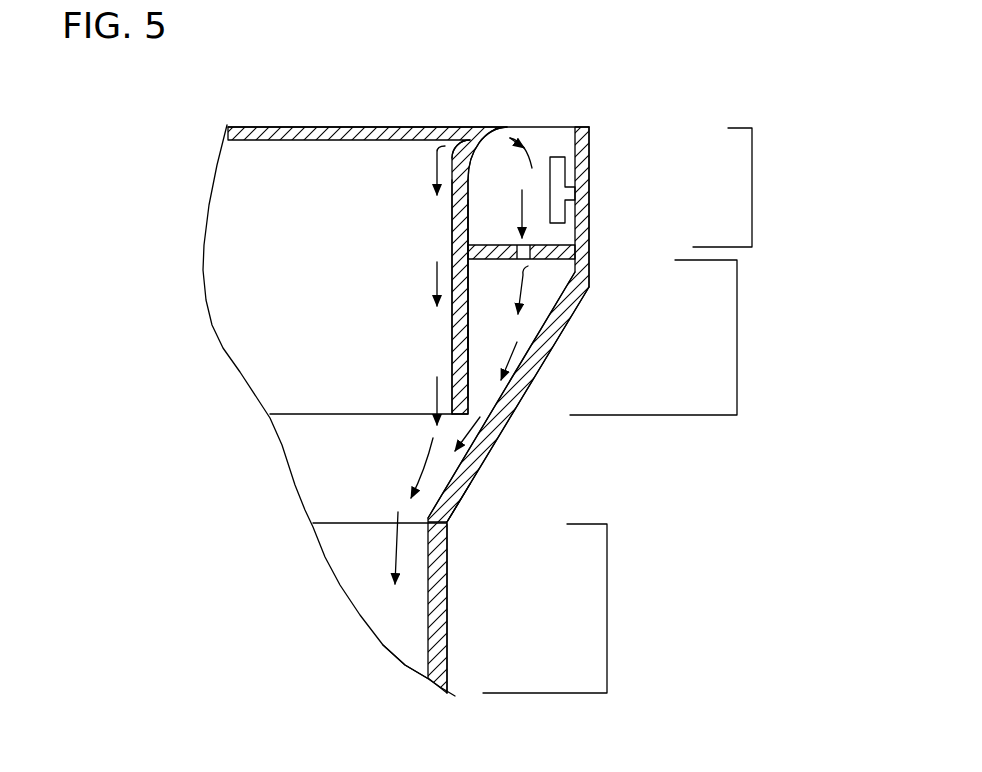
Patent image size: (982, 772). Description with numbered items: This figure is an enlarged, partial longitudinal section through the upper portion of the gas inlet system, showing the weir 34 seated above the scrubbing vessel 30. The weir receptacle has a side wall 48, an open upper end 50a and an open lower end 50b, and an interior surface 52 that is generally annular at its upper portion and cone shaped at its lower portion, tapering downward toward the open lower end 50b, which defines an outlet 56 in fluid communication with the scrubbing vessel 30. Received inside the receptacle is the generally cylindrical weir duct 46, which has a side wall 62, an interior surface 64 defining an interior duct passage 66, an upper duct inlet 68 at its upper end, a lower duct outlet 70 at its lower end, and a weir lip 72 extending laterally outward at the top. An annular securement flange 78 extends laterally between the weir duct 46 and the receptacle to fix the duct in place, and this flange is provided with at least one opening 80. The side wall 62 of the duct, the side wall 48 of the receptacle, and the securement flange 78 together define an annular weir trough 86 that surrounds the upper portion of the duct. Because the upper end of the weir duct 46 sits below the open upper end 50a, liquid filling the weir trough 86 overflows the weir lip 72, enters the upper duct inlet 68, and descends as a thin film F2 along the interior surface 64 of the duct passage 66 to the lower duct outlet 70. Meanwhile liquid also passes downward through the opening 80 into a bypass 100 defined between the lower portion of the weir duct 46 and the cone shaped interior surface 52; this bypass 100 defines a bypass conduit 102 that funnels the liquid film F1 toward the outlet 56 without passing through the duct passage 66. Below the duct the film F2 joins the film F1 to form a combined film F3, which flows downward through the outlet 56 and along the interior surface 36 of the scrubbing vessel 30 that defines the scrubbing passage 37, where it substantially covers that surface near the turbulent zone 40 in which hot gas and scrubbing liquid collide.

The scrubbing vessel 30 is at (464, 642).
The weir 34 is at (653, 202).
The interior surface 36 is at (420, 617).
The scrubbing passage 37 is at (388, 613).
The turbulent zone 40 is at (607, 600).
The weir duct 46 is at (448, 136).
The side wall 48 is at (589, 147).
The open upper end 50a is at (413, 127).
The open lower end 50b is at (447, 523).
The interior surface 52 is at (543, 310).
The outlet 56 is at (313, 525).
The side wall 62 is at (460, 326).
The interior surface 64 is at (441, 237).
The interior duct passage 66 is at (283, 263).
The upper duct inlet 68 is at (312, 140).
The lower duct outlet 70 is at (318, 414).
The weir lip 72 is at (500, 140).
The securement flange 78 is at (577, 229).
The opening 80 is at (540, 268).
The weir trough 86 is at (752, 185).
The bypass 100 is at (737, 337).
The bypass conduit 102 is at (486, 333).
The flow of liquid through the lower trough outlet and bypass F1 is at (527, 285).
The flow of thin film of liquid through the duct passage F2 is at (438, 165).
The flow of combined film of liquid F3 is at (428, 462).